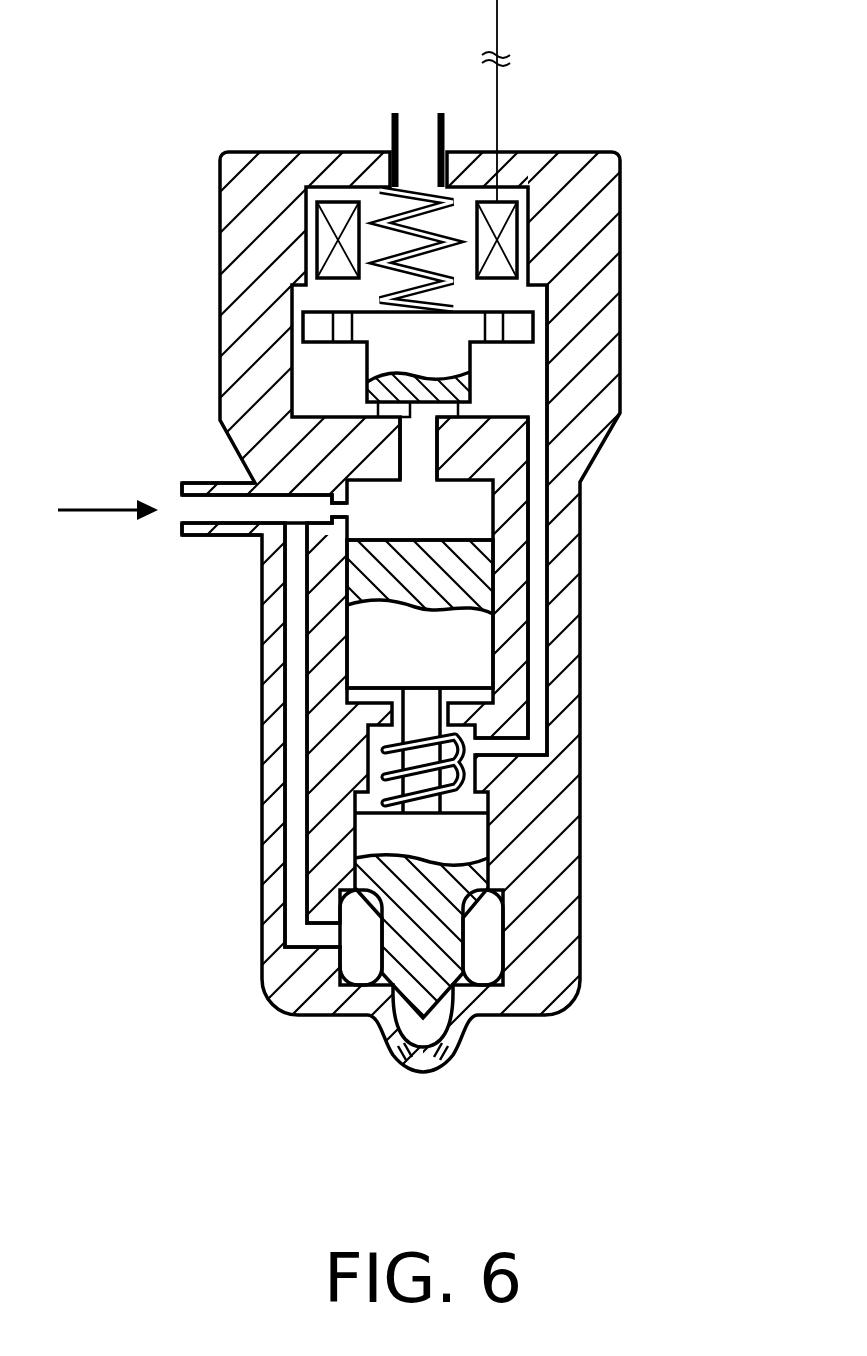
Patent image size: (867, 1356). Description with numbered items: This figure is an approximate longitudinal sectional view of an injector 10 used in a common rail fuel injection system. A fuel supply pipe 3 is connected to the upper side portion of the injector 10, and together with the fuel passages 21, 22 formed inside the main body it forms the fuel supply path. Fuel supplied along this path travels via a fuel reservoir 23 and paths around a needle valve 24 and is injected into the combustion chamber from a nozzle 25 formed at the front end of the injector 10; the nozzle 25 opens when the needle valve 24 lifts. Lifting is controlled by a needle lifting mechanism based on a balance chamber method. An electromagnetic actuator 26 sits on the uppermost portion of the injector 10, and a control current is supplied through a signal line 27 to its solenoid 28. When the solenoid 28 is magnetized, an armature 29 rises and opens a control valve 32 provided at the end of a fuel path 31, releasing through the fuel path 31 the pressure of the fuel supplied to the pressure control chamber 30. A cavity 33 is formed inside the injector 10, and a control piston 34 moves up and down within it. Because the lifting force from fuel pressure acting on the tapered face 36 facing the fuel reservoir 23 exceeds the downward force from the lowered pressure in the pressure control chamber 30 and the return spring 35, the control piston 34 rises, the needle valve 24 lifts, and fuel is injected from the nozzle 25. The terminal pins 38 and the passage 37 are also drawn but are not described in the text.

The injector 10 is at (660, 135).
The terminal pins 38 is at (413, 127).
The signal line 27 is at (497, 32).
The electromagnetic actuator 26 is at (366, 200).
The solenoid 28 is at (323, 238).
The control valve 32 is at (335, 376).
The armature 29 is at (443, 357).
The fuel path 31 is at (418, 410).
The fuel passage 21 is at (293, 497).
The fuel supply pipe 3 is at (223, 530).
The pressure control chamber 30 is at (436, 528).
The control piston 34 is at (457, 568).
The cavity 33 is at (478, 663).
The fuel passage 22 is at (295, 592).
The return spring 35 is at (383, 732).
The drain passage 37 is at (540, 690).
The needle valve 24 is at (482, 837).
The tapered face 36 is at (353, 930).
The fuel reservoir 23 is at (363, 958).
The nozzle 25 is at (400, 1053).